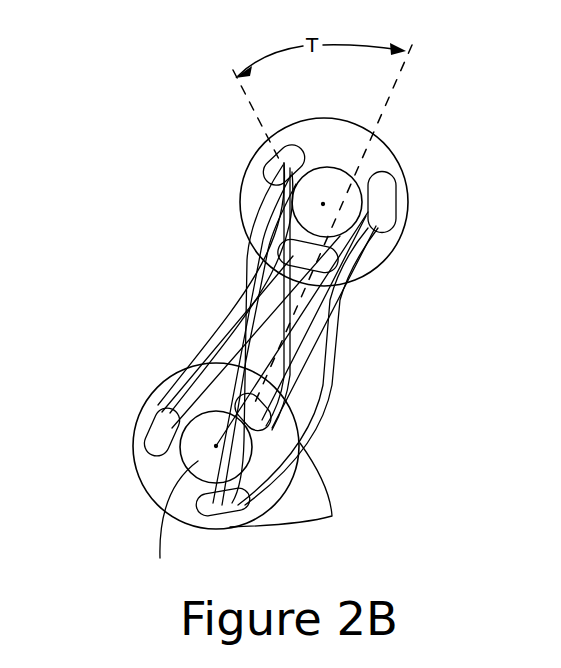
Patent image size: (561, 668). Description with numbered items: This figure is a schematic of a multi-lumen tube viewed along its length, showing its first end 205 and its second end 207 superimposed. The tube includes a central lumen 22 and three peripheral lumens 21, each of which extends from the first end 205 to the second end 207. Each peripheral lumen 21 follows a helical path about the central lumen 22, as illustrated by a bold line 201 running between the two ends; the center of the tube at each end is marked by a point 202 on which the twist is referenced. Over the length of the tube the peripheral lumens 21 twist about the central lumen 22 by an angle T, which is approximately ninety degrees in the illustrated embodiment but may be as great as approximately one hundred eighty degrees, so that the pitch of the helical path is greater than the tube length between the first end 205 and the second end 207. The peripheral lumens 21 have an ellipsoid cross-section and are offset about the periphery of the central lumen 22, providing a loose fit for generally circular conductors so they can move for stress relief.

The second end 207 is at (398, 132).
The first end 205 is at (122, 498).
The central hub 202 is at (323, 204).
The bold line 201 is at (245, 255).
The peripheral lumens 21 is at (150, 423).
The central lumen 22 is at (173, 524).